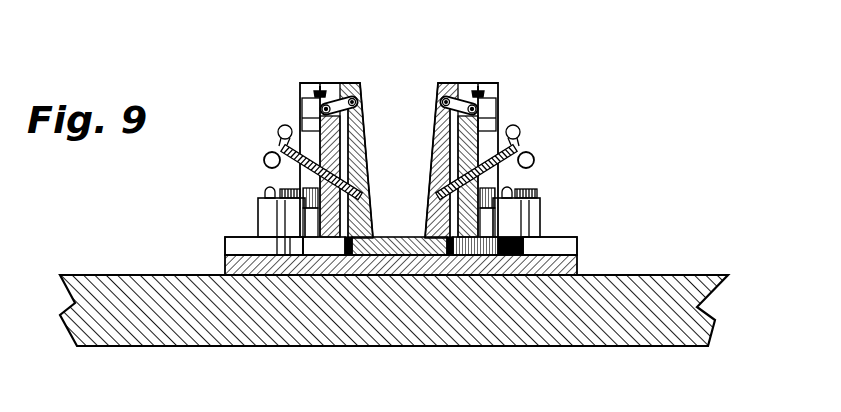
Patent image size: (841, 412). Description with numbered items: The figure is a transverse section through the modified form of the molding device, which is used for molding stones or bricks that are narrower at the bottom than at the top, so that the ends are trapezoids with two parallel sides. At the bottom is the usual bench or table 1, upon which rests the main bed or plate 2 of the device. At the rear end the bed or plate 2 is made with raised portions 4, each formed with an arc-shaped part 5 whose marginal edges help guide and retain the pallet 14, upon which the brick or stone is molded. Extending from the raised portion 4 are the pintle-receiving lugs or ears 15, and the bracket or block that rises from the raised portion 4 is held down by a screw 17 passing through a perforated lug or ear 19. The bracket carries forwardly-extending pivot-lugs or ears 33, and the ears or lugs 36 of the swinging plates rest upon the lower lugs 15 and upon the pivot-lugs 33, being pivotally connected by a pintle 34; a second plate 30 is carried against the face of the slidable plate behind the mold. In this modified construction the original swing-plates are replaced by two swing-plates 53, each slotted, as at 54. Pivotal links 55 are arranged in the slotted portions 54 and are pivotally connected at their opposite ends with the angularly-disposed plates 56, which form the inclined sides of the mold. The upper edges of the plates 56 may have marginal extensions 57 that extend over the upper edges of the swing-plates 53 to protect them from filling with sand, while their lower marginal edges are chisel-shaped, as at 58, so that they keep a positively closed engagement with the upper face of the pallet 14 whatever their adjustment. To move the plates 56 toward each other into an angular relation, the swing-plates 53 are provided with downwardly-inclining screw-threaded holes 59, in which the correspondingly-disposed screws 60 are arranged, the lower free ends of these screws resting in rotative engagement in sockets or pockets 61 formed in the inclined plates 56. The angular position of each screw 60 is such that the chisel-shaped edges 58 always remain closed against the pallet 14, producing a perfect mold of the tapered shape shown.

The bench or table 1 is at (535, 332).
The main bed or plate 2 is at (458, 275).
The raised portion 4 is at (227, 253).
The arc-shaped part 5 is at (227, 243).
The pallet 14 is at (402, 260).
The pintle-receiving lugs or ears 15 is at (303, 240).
The screw 17 is at (258, 200).
The perforated lug or ear 19 is at (277, 207).
The second plate 30 is at (414, 92).
The pivot-lugs or ears 33 is at (308, 118).
The pintle 34 is at (320, 95).
The ears or lugs 36 is at (303, 212).
The swing-plate 53 is at (278, 135).
The slot 54 is at (315, 94).
The pivotal link 55 is at (330, 95).
The angularly-disposed plate 56 is at (366, 140).
The marginal extension 57 is at (336, 83).
The chisel-shaped edge 58 is at (381, 238).
The downwardly-inclining screw-threaded hole 59 is at (280, 186).
The screw 60 is at (264, 160).
The socket or pocket 61 is at (370, 181).